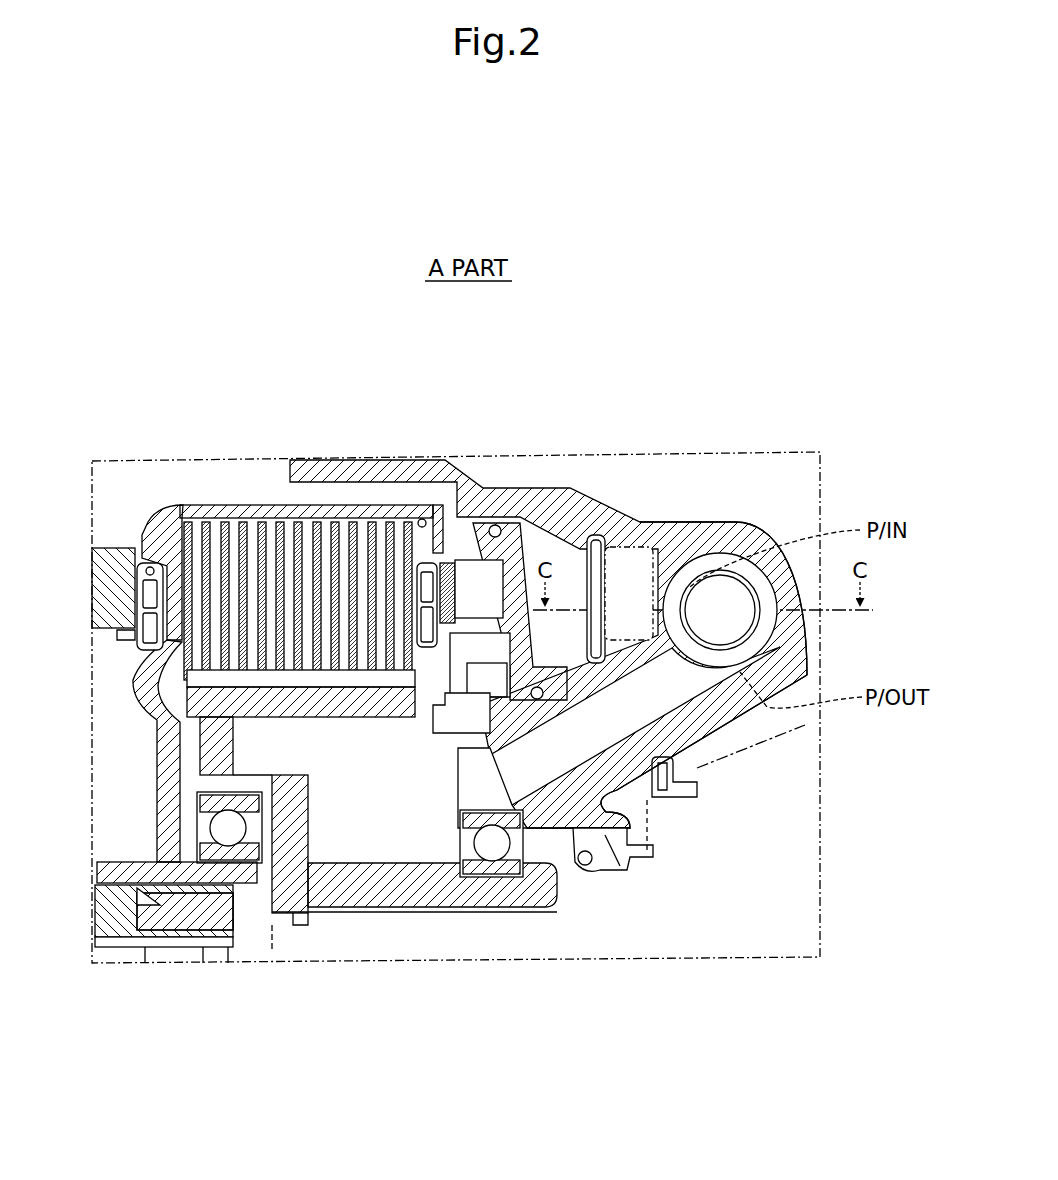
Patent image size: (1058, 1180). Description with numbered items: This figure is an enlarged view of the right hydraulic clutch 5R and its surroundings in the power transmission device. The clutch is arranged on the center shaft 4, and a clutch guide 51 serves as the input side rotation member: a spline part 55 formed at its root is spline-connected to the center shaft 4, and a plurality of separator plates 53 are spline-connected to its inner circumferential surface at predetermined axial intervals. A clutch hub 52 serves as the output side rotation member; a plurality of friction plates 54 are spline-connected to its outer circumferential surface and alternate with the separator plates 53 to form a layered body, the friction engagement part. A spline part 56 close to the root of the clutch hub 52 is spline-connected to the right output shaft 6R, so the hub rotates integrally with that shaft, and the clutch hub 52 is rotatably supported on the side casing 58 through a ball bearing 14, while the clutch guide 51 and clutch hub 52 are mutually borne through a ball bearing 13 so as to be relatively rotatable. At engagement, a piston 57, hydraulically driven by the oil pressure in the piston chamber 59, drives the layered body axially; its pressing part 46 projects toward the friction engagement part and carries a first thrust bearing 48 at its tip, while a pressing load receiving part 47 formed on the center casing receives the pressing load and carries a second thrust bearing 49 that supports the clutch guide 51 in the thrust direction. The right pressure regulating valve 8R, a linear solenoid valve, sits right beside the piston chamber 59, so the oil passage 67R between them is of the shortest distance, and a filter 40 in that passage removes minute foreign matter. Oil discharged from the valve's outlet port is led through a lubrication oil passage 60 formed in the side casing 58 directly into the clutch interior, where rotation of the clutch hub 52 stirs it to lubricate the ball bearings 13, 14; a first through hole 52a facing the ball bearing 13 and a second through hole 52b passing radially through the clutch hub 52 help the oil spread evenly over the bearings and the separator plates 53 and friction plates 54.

The center shaft 4 is at (122, 940).
The right hydraulic clutch 5R is at (177, 500).
The right output shaft 6R is at (500, 940).
The right pressure regulating valve 8R is at (733, 547).
The ball bearing 13 is at (197, 807).
The ball bearing 14 is at (462, 852).
The filter 40 is at (598, 533).
The pressing part 46 is at (447, 553).
The pressing load receiving part 47 is at (127, 545).
The first thrust bearing 48 is at (458, 583).
The second thrust bearing 49 is at (145, 592).
The clutch guide 51 is at (247, 498).
The clutch hub 52 is at (320, 707).
The first through hole 52a is at (308, 833).
The second through hole 52b is at (200, 701).
The separator plates 53 is at (203, 515).
The friction plates 54 is at (258, 705).
The spline part 55 is at (180, 940).
The spline part 56 is at (357, 915).
The piston 57 is at (547, 538).
The side casing 58 is at (670, 530).
The piston chamber 59 is at (558, 530).
The lubrication oil passage 60 is at (703, 693).
The oil passage 67R is at (690, 540).